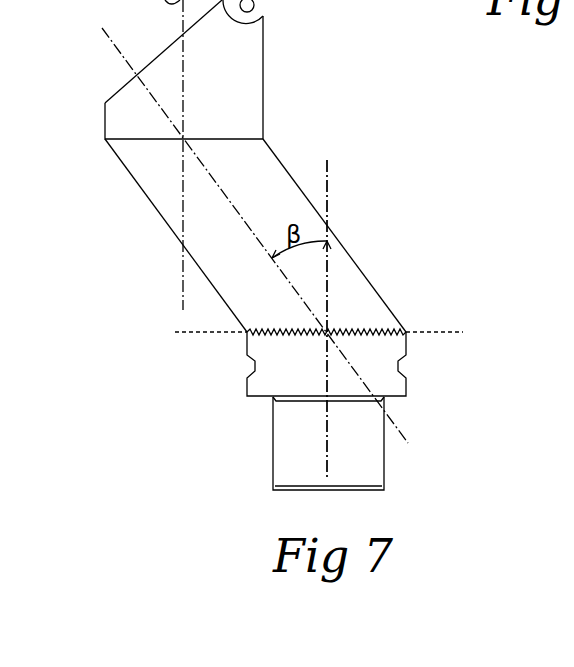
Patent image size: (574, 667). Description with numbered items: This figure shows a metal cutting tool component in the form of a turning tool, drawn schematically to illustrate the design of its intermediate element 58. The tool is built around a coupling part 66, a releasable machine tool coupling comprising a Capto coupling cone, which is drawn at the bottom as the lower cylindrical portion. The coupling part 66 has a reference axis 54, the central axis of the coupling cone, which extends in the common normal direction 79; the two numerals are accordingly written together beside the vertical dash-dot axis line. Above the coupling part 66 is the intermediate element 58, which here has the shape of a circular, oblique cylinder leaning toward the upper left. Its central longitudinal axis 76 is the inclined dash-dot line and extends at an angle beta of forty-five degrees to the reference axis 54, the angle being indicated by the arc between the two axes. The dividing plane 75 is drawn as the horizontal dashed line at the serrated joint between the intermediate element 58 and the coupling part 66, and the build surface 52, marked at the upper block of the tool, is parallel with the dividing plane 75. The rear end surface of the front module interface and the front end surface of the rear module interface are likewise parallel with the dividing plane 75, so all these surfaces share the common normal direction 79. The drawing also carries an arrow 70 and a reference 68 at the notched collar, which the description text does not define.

The build surface 52 is at (137, 138).
The reference axis 54 is at (327, 172).
The intermediate element 58 is at (347, 276).
The coupling part 66 is at (363, 452).
The clamping groove collar 68 is at (392, 378).
The feed direction arrow 70 is at (162, 170).
The dividing plane 75 is at (462, 331).
The central longitudinal axis 76 is at (116, 52).
The common normal direction 79 is at (345, 289).